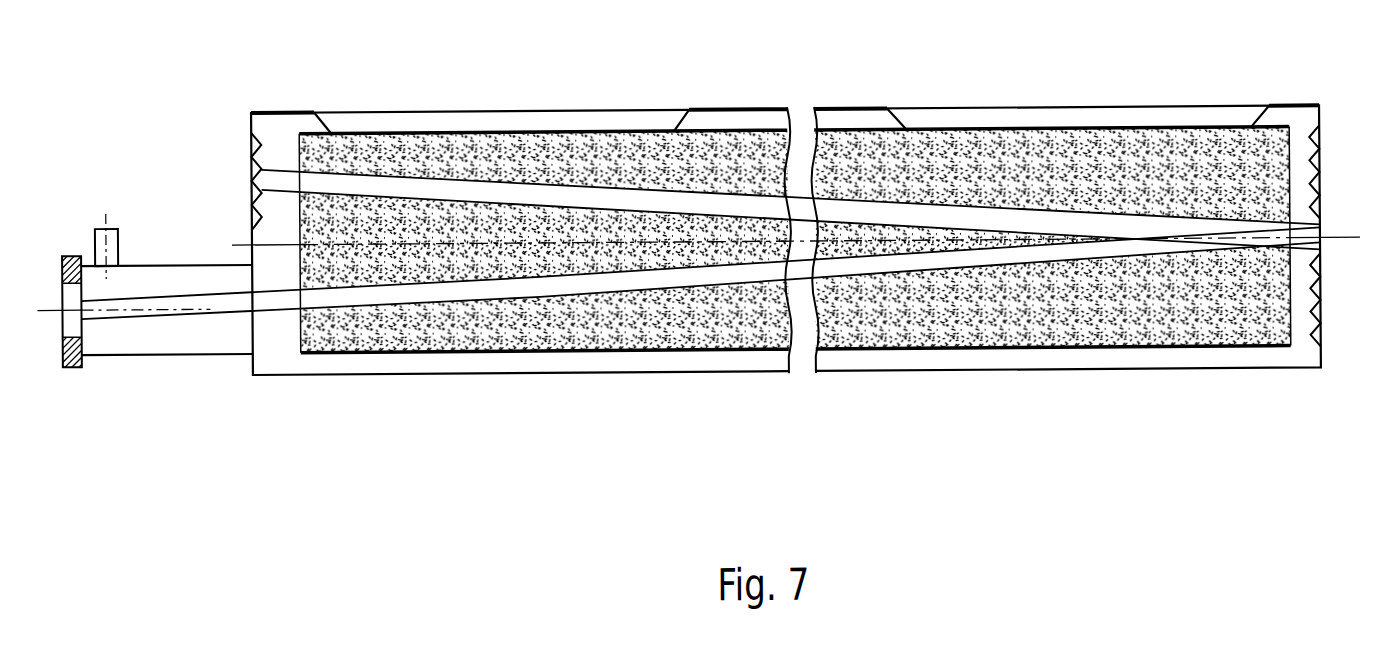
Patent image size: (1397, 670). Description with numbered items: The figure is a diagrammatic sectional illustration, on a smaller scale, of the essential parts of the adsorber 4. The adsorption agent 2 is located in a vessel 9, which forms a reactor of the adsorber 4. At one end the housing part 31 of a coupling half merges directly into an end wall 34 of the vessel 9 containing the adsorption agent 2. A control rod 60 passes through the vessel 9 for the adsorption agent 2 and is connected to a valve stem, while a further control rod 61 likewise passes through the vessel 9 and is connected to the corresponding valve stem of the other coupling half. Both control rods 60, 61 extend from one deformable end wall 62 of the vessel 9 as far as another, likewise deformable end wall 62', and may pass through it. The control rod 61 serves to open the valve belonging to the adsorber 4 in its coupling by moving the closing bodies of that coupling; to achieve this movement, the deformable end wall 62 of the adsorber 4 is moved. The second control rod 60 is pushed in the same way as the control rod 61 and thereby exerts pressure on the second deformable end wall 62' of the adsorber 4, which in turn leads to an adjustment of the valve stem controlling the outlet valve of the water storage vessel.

The adsorption agent 2 is at (972, 150).
The adsorber 4 is at (852, 102).
The vessel 9 is at (462, 375).
The housing part 31 is at (177, 355).
The end wall 34 is at (250, 245).
The control rod 60 is at (425, 188).
The further control rod 61 is at (554, 285).
The deformable end wall 62 is at (1350, 236).
The deformable end wall 62' is at (220, 163).